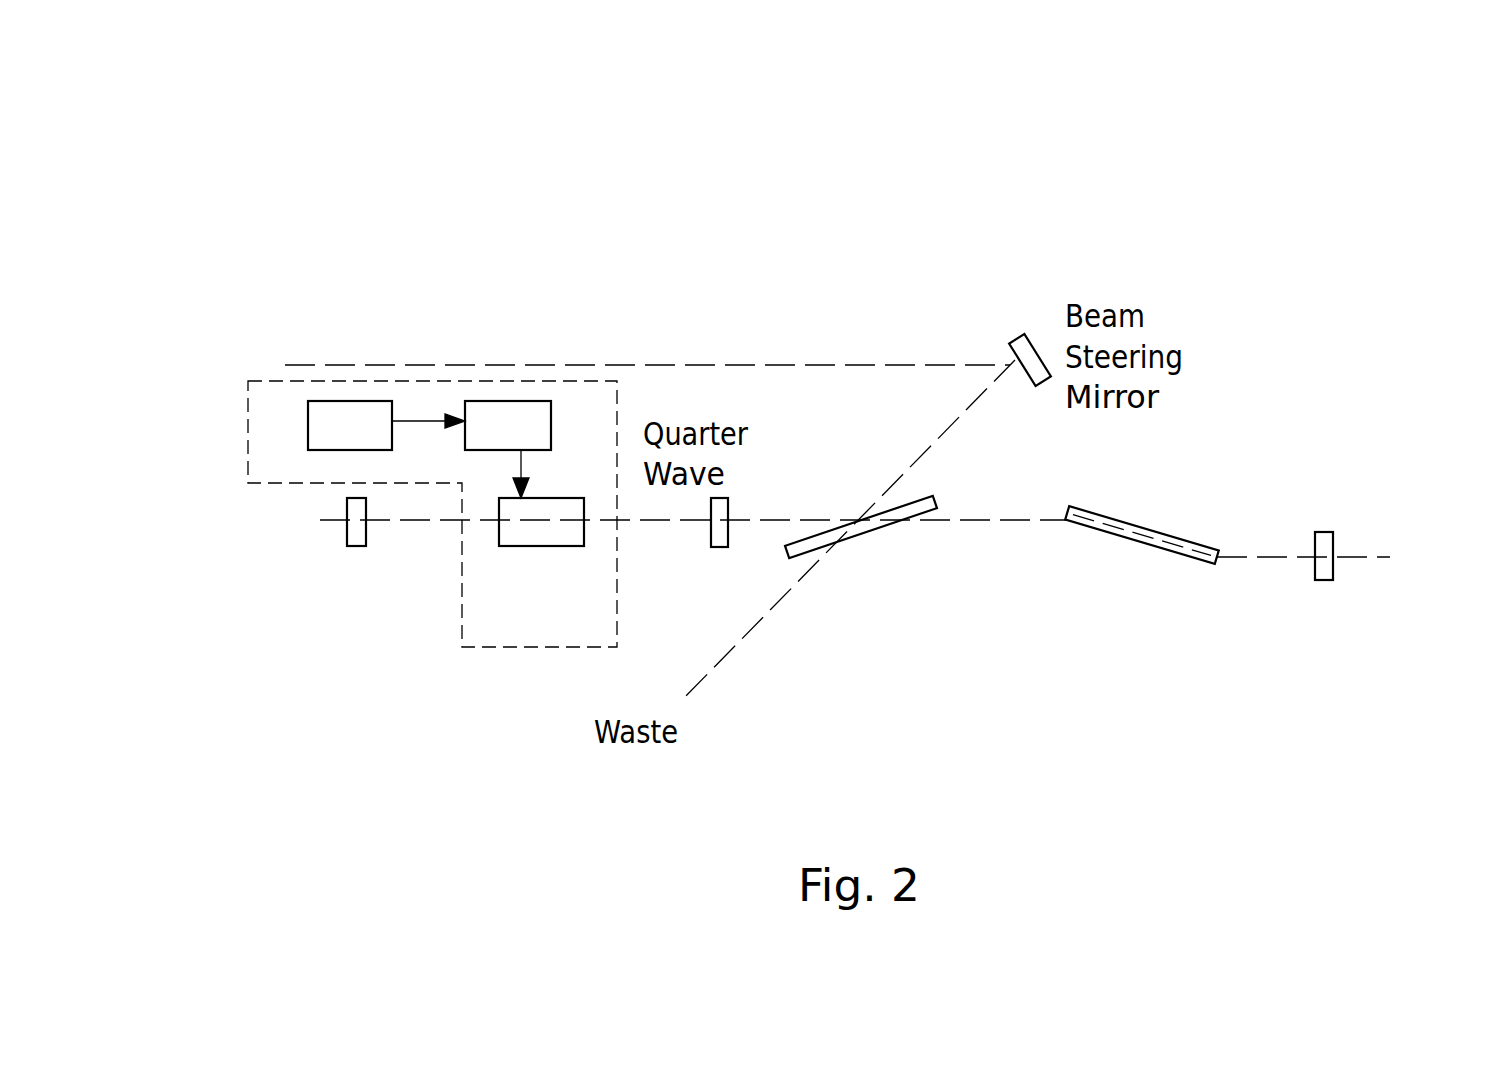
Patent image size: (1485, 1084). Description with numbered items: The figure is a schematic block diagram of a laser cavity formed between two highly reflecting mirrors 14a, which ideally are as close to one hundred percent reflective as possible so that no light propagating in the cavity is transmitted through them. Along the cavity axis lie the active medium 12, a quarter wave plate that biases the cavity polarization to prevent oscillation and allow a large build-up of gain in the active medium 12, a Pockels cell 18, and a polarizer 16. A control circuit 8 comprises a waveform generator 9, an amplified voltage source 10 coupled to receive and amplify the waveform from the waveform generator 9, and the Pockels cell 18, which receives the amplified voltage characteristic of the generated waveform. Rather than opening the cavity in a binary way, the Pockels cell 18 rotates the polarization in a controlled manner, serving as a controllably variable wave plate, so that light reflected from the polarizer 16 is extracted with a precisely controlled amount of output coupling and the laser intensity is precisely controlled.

The control circuit 8 is at (429, 381).
The waveform generator 9 is at (308, 412).
The amplified voltage source 10 is at (503, 400).
The active medium 12 is at (1152, 548).
The highly reflecting mirror 14a is at (346, 507).
The polarizer 16 is at (880, 528).
The Pockels cell 18 is at (500, 537).